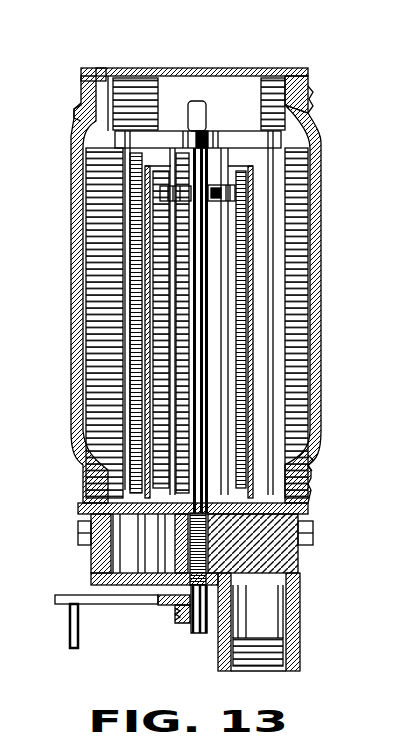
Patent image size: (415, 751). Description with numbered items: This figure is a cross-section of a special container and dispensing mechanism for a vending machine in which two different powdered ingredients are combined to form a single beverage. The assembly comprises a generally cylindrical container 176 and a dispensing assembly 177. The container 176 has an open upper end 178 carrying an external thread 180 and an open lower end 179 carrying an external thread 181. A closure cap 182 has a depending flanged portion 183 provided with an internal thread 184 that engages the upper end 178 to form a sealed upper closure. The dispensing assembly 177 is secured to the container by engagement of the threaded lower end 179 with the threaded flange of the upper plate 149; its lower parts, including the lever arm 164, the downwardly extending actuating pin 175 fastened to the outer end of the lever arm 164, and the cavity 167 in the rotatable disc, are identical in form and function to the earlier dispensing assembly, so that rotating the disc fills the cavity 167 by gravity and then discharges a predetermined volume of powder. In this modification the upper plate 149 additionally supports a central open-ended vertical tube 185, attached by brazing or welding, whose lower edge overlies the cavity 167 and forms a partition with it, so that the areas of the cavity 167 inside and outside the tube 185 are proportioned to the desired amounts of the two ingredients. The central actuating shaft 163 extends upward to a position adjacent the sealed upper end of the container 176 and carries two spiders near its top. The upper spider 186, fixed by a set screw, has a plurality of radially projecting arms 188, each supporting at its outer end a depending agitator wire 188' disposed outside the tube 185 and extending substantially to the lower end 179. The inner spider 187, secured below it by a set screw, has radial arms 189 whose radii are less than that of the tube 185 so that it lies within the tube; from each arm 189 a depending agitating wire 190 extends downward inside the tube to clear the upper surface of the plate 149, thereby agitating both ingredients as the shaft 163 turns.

The container 176 is at (66, 240).
The closure cap 182 is at (183, 58).
The internal thread 184 is at (106, 58).
The flanged portion 183 is at (73, 81).
The upper open end 178 is at (277, 92).
The external thread 180 is at (300, 86).
The upper spider 186 is at (154, 118).
The radially projecting arms 188 is at (198, 126).
The radial arms 189 is at (170, 177).
The inner spider 187 is at (212, 176).
The agitator wire 188' is at (315, 323).
The vertical tube 185 is at (243, 277).
The agitating wire 190 is at (220, 400).
The lower open end 179 is at (303, 457).
The external thread 181 is at (304, 482).
The upper plate 149 is at (305, 498).
The cavity 167 is at (84, 575).
The dispensing assembly 177 is at (293, 590).
The lever arm 164 is at (100, 597).
The actuating pin 175 is at (62, 617).
The actuating shaft 163 is at (182, 625).